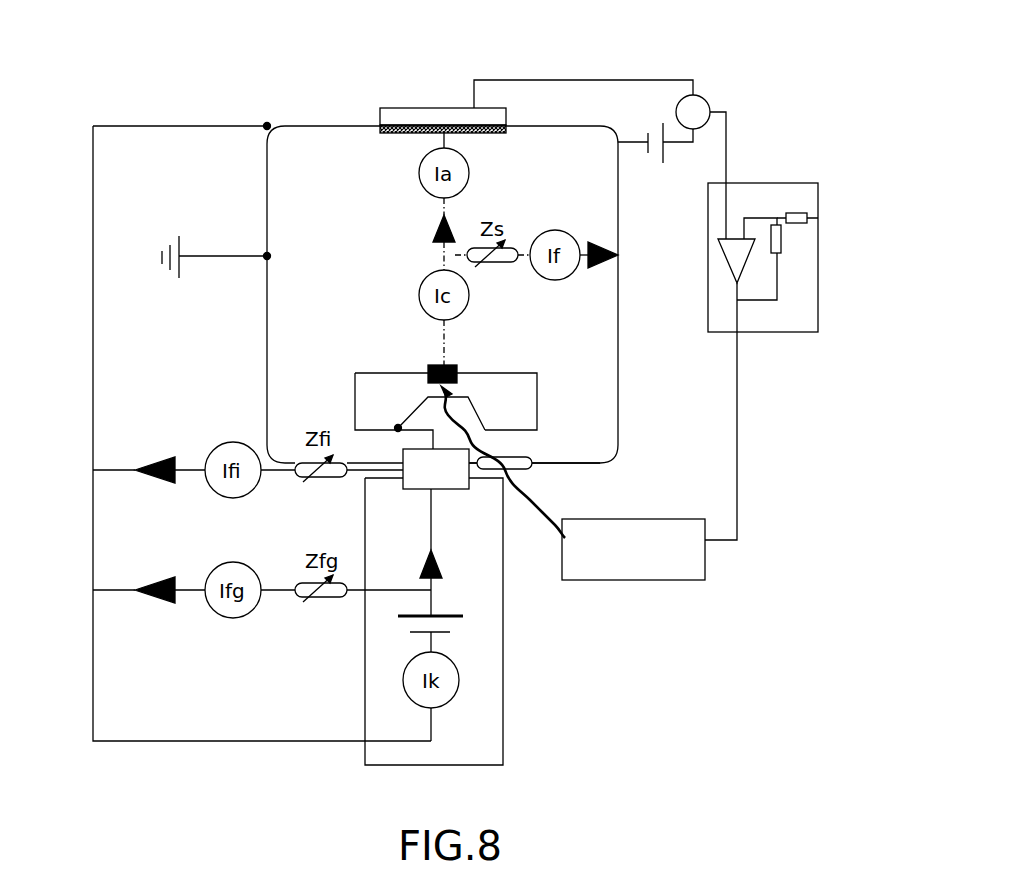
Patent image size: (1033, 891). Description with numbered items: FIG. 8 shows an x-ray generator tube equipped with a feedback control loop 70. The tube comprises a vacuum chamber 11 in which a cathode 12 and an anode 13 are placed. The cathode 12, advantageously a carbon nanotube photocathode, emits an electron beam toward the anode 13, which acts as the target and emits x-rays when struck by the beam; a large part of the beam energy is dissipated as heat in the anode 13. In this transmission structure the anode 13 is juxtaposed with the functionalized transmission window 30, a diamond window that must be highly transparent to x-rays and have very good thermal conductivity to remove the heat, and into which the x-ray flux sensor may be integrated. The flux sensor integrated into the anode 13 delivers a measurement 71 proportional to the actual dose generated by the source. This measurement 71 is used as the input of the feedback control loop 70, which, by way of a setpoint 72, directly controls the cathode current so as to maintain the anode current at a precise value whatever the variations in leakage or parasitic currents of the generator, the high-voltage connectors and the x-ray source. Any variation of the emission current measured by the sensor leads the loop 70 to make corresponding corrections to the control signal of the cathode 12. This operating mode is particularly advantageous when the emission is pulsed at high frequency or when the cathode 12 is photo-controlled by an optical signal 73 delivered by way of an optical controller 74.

The vacuum chamber 11 is at (267, 385).
The cathode 12 is at (365, 395).
The anode 13 is at (397, 128).
The functionalized transmission window 30 is at (420, 108).
The feedback control loop 70 is at (797, 325).
The measurement 71 is at (703, 96).
The setpoint 72 is at (822, 218).
The optical signal 73 is at (536, 503).
The optical controller 74 is at (633, 580).